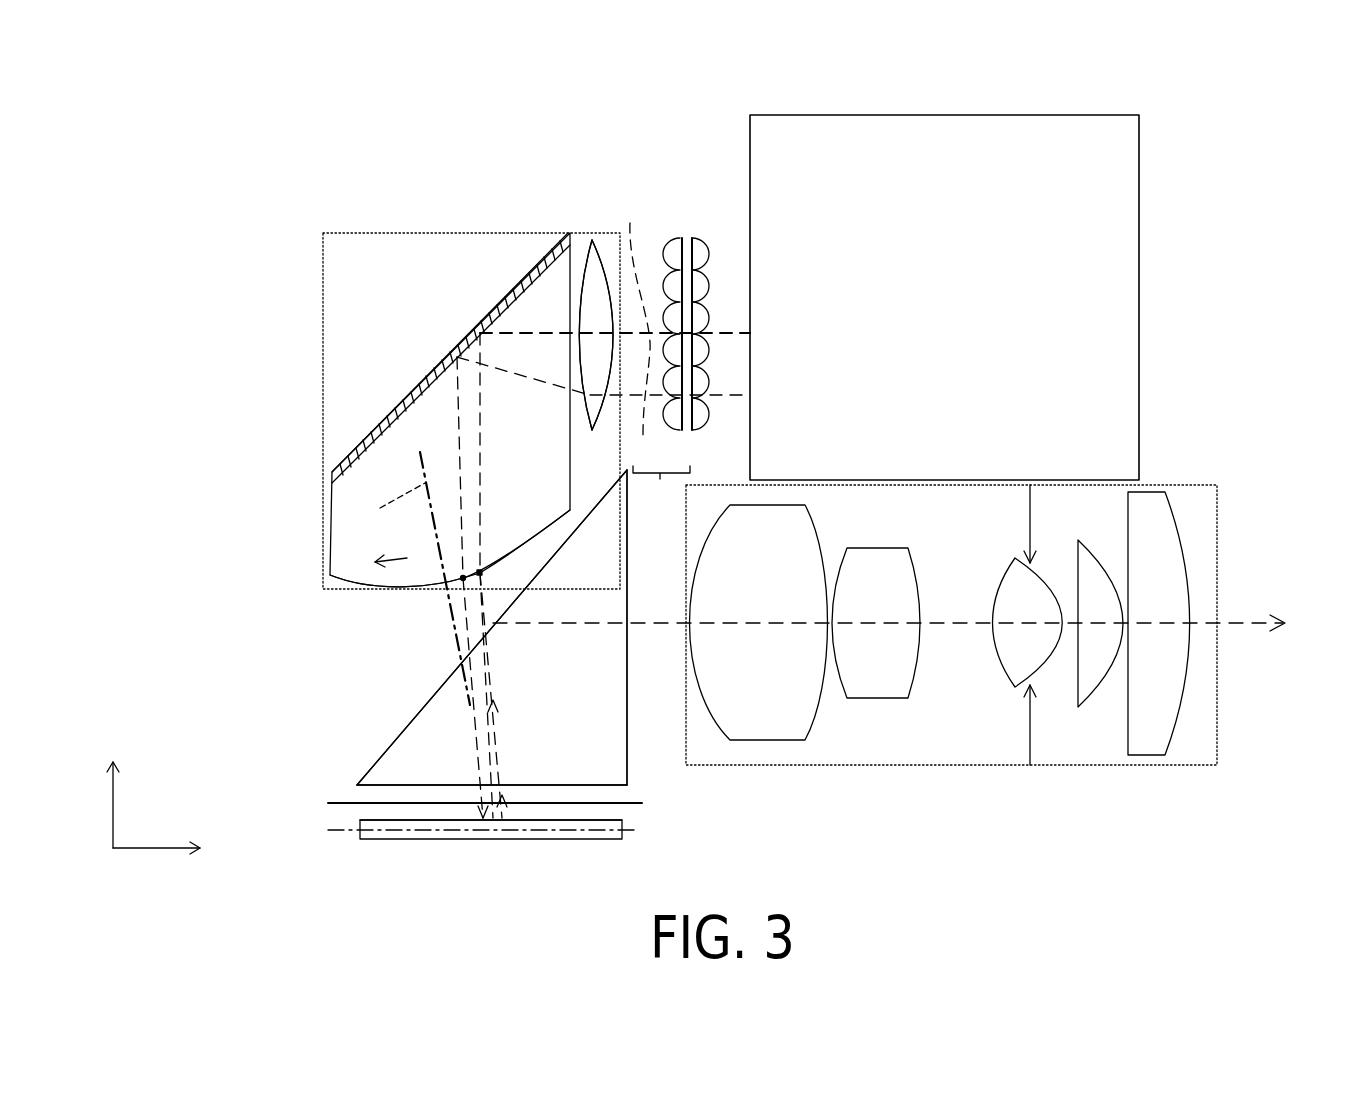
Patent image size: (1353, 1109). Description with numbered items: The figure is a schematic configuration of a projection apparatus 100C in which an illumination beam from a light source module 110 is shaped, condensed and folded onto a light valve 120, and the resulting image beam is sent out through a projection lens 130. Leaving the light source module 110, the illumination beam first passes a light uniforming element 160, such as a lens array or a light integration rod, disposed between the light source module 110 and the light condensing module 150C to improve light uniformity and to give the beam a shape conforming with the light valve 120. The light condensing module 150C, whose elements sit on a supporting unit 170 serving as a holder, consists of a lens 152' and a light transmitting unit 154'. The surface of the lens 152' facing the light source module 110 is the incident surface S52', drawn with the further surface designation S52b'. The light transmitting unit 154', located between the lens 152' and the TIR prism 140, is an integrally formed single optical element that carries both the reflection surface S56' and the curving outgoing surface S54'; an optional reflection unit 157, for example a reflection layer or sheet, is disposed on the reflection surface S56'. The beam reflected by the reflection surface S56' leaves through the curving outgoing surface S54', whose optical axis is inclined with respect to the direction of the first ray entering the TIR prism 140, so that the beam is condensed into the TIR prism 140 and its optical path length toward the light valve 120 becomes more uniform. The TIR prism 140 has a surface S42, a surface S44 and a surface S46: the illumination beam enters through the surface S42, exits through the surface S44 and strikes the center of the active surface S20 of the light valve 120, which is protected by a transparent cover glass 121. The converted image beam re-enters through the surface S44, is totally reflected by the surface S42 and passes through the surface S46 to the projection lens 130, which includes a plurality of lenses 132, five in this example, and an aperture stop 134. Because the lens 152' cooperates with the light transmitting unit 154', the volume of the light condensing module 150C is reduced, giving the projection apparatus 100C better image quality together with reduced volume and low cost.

The projection apparatus 100C is at (1262, 880).
The light source module 110 is at (1139, 315).
The light valve 120 is at (622, 833).
The transparent cover glass 121 is at (637, 803).
The projection lens 130 is at (1130, 767).
The lenses 132 is at (783, 723).
The aperture stop 134 is at (1030, 765).
The TIR prism 140 is at (363, 790).
The light condensing module 150C is at (360, 200).
The lens 152' is at (575, 281).
The light transmitting unit 154' is at (465, 583).
The reflection unit 157 is at (355, 448).
The light uniforming element 160 is at (692, 215).
The supporting unit 170 is at (323, 265).
The active surface S20 is at (615, 808).
The surface S42 is at (388, 745).
The surface S44 is at (367, 790).
The surface S46 is at (638, 697).
The incident surface S52' is at (596, 298).
The lens surface S52b' is at (530, 281).
The curving outgoing surface S54' is at (380, 615).
The reflection surface S56' is at (450, 322).